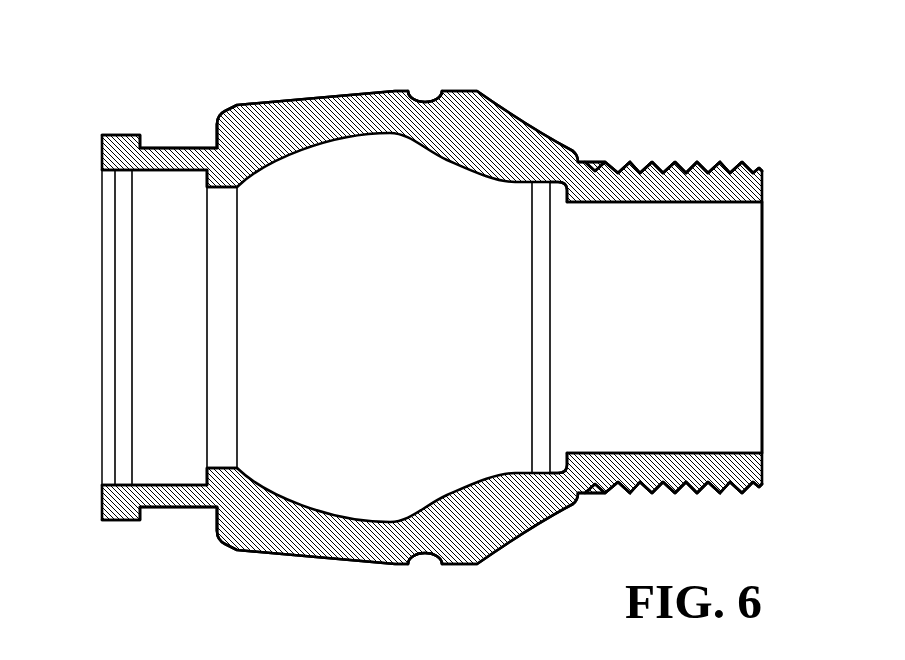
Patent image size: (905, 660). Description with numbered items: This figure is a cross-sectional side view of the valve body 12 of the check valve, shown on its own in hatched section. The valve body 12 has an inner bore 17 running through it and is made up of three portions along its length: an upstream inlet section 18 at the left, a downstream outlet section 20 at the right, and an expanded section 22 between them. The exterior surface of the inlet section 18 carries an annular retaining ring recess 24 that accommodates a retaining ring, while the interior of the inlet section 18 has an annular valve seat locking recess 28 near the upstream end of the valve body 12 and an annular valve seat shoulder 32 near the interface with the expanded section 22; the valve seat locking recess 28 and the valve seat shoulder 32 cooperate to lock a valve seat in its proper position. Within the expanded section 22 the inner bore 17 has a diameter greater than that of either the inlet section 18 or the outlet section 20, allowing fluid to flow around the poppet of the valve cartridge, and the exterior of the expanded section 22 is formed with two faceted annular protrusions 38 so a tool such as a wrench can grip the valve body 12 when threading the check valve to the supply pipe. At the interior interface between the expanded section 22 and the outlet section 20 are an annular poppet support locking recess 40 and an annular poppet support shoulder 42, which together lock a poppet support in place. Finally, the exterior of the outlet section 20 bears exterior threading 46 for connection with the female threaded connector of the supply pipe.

The valve body 12 is at (704, 63).
The inner bore 17 is at (740, 317).
The upstream inlet section 18 is at (157, 126).
The downstream outlet section 20 is at (695, 137).
The expanded section 22 is at (324, 70).
The annular retaining ring recess 24 is at (188, 150).
The annular valve seat locking recess 28 is at (117, 174).
The annular valve seat shoulder 32 is at (200, 181).
The faceted annular protrusions 38 is at (445, 88).
The annular poppet support locking recess 40 is at (537, 188).
The annular poppet support shoulder 42 is at (564, 190).
The exterior threading 46 is at (640, 165).